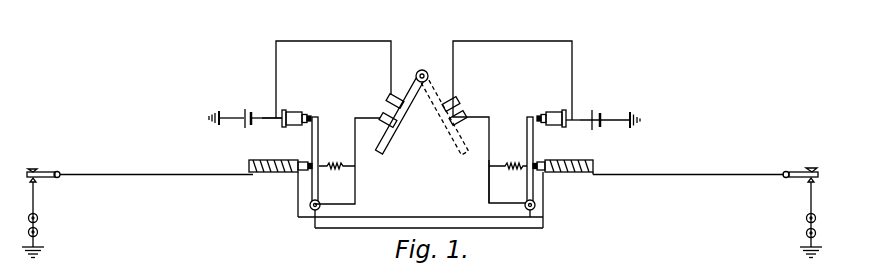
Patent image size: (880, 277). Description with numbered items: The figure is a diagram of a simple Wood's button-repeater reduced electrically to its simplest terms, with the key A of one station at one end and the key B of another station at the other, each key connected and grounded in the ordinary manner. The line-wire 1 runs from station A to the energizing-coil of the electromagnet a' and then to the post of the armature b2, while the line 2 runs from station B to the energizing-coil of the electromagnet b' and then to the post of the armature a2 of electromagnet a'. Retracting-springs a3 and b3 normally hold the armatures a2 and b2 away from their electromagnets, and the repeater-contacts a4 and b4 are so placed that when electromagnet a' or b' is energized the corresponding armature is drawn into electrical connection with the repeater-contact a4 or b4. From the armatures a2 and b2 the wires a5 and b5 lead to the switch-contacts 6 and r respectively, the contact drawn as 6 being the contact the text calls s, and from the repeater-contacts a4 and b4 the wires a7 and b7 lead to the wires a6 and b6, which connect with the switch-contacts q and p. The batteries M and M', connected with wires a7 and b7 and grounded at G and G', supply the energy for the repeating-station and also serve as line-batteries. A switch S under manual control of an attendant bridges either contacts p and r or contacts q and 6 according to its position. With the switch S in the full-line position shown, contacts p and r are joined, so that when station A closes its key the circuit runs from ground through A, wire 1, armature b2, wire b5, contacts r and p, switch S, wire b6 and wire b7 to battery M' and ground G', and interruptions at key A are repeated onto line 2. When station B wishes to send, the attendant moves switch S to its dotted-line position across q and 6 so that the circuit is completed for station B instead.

The key of one station A is at (802, 201).
The key of another station B is at (41, 204).
The line-wire 1 is at (715, 174).
The line 2 is at (132, 174).
The ground G is at (646, 118).
The ground G' is at (214, 118).
The battery M is at (605, 108).
The battery M' is at (260, 109).
The electromagnet a' is at (578, 191).
The armature a2 is at (541, 152).
The retracting-spring a3 is at (510, 164).
The repeater-contact a4 is at (540, 115).
The wire a5 is at (488, 184).
The wire a6 is at (524, 30).
The wire a7 is at (572, 122).
The electromagnet b' is at (267, 183).
The armature b2 is at (319, 189).
The retracting-spring b3 is at (330, 163).
The repeater-contact b4 is at (307, 114).
The wire b5 is at (356, 178).
The wire b6 is at (342, 30).
The wire b7 is at (273, 120).
The switch S is at (396, 135).
The switch-contact p is at (388, 97).
The switch-contact r is at (381, 115).
The switch-contact q is at (457, 100).
The contact 6 is at (466, 116).